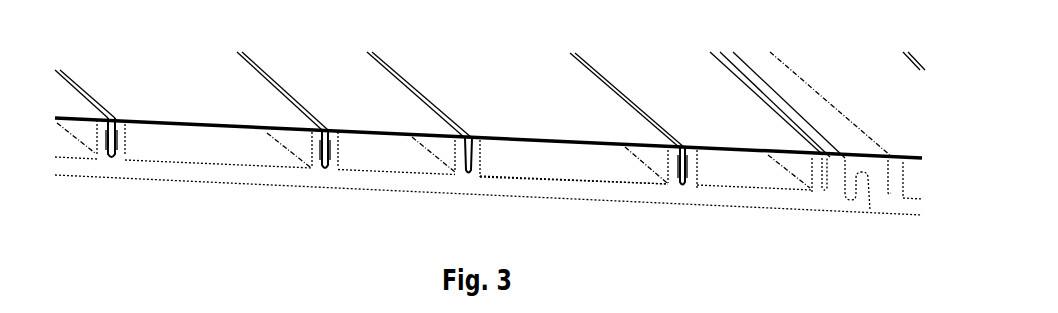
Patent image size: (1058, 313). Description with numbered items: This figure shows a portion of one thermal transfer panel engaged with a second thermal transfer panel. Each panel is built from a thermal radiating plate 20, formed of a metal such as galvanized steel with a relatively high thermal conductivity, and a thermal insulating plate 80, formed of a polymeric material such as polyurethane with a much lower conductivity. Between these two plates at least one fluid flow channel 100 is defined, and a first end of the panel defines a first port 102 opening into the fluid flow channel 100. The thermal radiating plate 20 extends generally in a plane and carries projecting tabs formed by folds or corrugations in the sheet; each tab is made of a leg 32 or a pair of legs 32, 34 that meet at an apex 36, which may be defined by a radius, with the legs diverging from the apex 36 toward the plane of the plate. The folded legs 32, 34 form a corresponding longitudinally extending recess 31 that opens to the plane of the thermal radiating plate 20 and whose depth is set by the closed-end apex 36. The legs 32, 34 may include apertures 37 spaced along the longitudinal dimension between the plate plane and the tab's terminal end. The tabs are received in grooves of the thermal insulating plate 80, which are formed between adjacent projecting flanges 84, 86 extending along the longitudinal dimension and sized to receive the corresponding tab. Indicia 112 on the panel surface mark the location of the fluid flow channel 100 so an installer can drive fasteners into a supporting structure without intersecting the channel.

The thermal radiating plate 20 is at (494, 108).
The recess 31 is at (110, 117).
The leg 32 is at (318, 152).
The leg 34 is at (332, 152).
The apex 36 is at (468, 175).
The apertures 37 is at (325, 130).
The thermal insulating plate 80 is at (228, 172).
The projecting flange 84 is at (104, 150).
The projecting flange 86 is at (118, 152).
The fluid flow channel 100 is at (184, 157).
The first port 102 is at (538, 178).
The indicia 112 is at (823, 137).